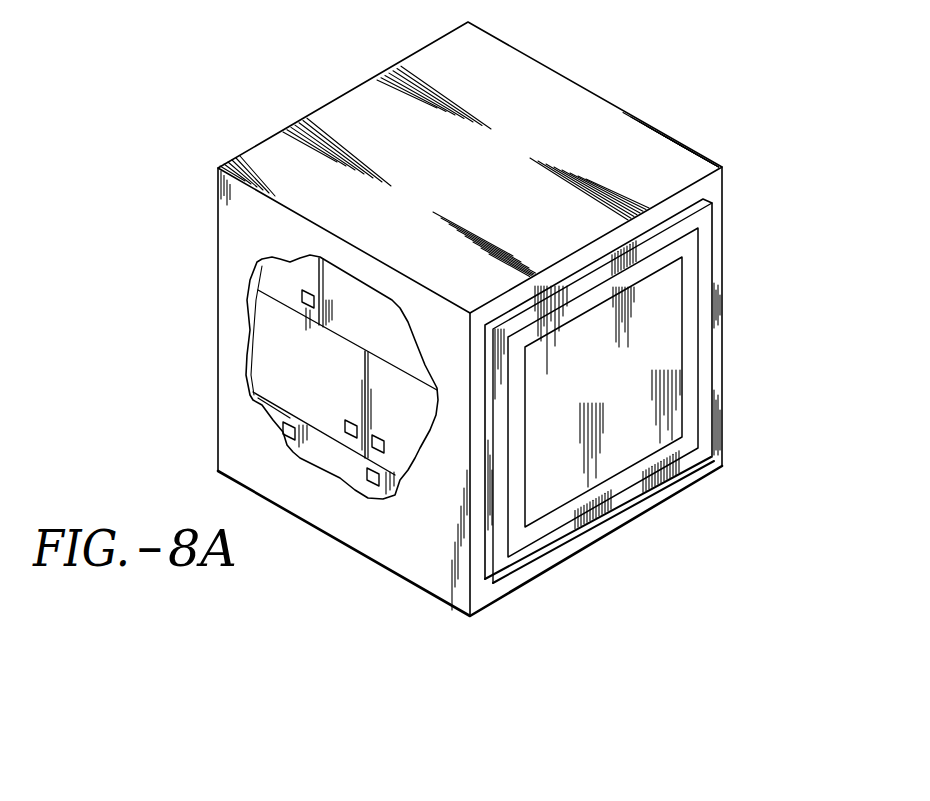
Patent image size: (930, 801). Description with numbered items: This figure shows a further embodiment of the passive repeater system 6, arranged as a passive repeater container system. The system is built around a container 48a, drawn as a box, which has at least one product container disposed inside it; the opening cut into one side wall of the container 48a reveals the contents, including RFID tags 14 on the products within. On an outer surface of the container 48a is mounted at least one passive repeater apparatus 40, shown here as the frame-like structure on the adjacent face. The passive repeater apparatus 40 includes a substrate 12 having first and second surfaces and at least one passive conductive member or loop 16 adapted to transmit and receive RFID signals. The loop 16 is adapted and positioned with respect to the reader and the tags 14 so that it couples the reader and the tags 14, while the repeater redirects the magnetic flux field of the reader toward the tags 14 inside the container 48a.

The passive repeater system 6 is at (674, 66).
The substrate 12 is at (697, 462).
The RFID tag 14 is at (302, 294).
The passive conductive loop 16 is at (690, 362).
The passive repeater apparatus 40 is at (703, 223).
The container 48a is at (218, 430).